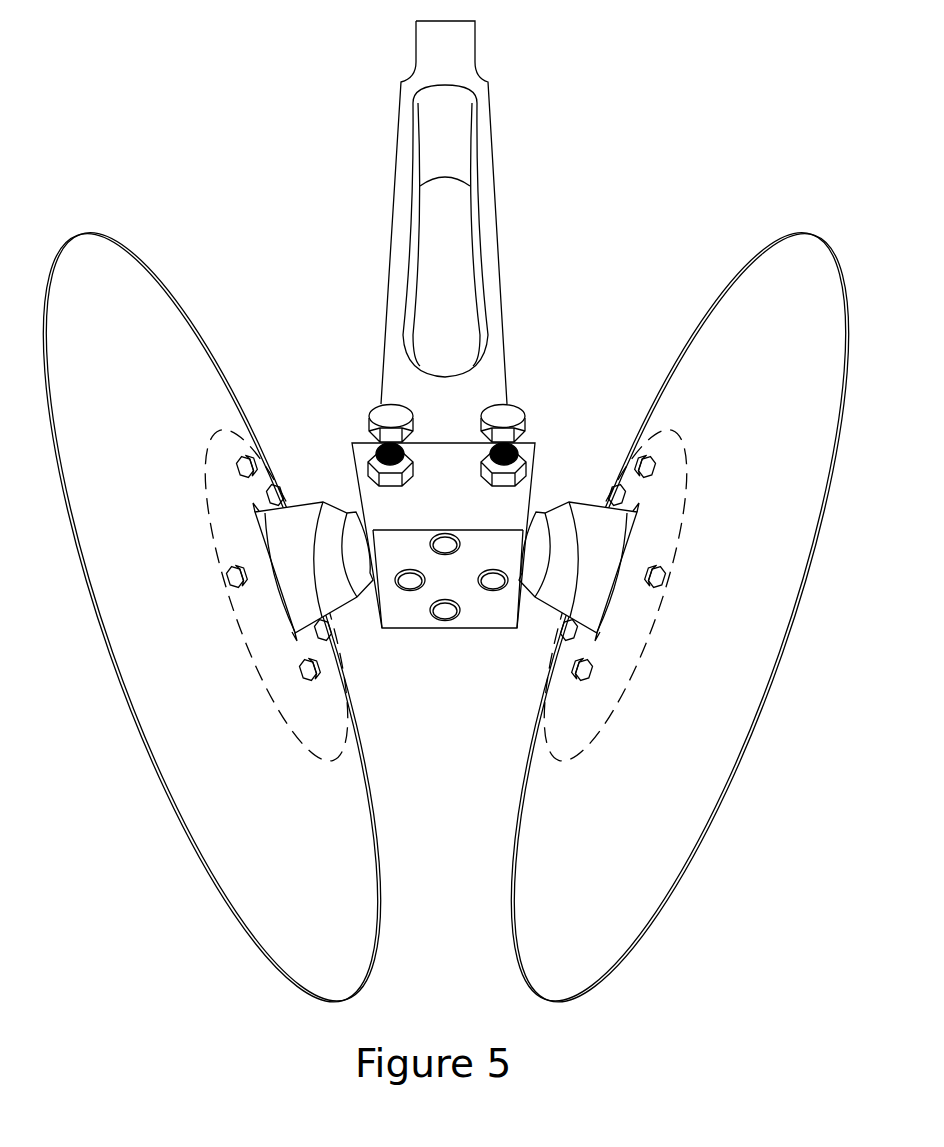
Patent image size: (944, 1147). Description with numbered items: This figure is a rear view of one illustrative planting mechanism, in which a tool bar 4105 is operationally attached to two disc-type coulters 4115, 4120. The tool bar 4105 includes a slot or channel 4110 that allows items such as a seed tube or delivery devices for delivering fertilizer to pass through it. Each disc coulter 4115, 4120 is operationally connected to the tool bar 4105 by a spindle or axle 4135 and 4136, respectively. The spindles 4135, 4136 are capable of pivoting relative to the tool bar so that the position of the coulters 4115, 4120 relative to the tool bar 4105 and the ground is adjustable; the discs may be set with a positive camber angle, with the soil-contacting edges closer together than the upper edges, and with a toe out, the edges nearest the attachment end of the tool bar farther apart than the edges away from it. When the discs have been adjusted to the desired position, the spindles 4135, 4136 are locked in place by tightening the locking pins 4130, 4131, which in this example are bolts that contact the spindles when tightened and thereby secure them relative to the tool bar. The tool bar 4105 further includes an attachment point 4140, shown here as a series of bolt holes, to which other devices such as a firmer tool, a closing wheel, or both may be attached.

The tool bar 4105 is at (489, 88).
The slot or channel 4110 is at (412, 172).
The disc coulter 4115 is at (95, 238).
The disc coulter 4120 is at (802, 240).
The locking pin 4130 is at (514, 418).
The locking pin 4131 is at (380, 418).
The spindle or axle 4135 is at (540, 518).
The spindle or axle 4136 is at (333, 497).
The attachment point 4140 is at (445, 622).